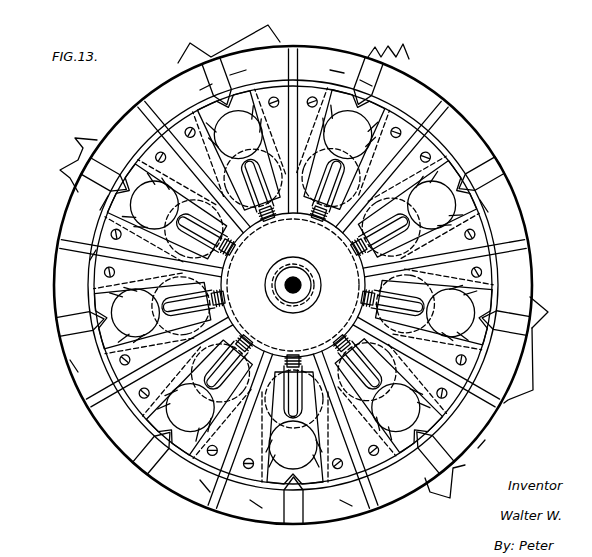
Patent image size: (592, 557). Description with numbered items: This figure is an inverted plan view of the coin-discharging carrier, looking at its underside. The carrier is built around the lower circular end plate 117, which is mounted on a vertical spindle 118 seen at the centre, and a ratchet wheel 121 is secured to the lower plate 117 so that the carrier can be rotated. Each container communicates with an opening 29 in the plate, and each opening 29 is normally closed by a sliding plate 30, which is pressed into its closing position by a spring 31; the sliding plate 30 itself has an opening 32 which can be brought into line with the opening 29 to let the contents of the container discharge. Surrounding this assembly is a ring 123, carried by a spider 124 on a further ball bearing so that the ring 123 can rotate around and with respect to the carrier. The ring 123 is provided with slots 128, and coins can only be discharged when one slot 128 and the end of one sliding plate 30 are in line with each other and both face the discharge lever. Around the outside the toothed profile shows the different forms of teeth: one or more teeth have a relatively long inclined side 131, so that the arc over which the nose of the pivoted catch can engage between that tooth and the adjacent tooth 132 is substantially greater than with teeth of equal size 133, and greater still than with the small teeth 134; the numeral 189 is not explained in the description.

The lower circular end plate 117 is at (170, 95).
The vertical spindle 118 is at (301, 287).
The ratchet wheel 121 is at (222, 283).
The ring 123 is at (312, 65).
The spider 124 is at (440, 110).
The slot 128 is at (103, 172).
The relatively long inclined side 131 is at (256, 40).
The adjacent tooth 132 is at (548, 292).
The teeth of equal size 133 is at (75, 150).
The small teeth 134 is at (385, 55).
The rim flange 189 is at (62, 228).
The opening 29 is at (414, 207).
The sliding plate 30 is at (318, 147).
The spring 31 is at (263, 218).
The opening 32 is at (222, 146).